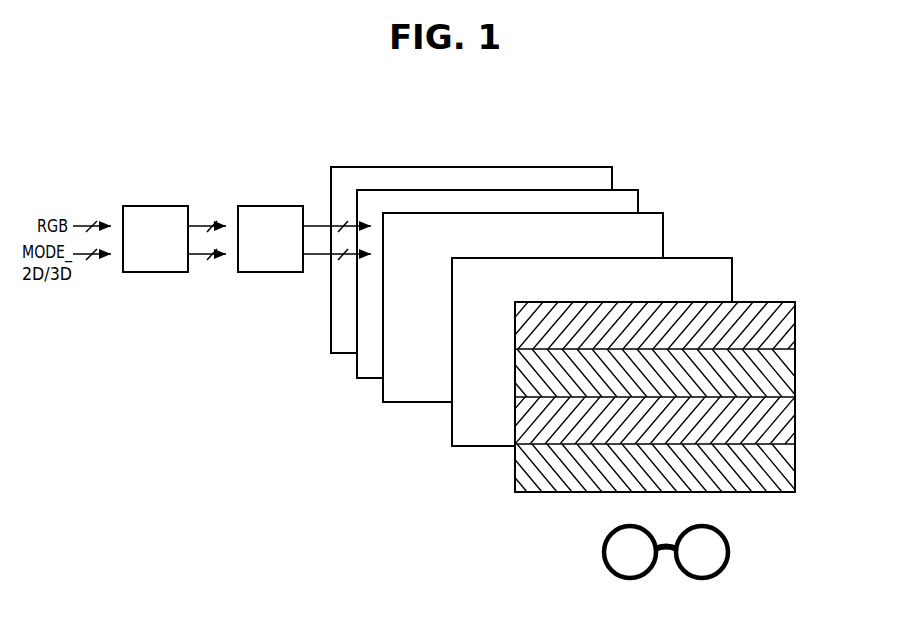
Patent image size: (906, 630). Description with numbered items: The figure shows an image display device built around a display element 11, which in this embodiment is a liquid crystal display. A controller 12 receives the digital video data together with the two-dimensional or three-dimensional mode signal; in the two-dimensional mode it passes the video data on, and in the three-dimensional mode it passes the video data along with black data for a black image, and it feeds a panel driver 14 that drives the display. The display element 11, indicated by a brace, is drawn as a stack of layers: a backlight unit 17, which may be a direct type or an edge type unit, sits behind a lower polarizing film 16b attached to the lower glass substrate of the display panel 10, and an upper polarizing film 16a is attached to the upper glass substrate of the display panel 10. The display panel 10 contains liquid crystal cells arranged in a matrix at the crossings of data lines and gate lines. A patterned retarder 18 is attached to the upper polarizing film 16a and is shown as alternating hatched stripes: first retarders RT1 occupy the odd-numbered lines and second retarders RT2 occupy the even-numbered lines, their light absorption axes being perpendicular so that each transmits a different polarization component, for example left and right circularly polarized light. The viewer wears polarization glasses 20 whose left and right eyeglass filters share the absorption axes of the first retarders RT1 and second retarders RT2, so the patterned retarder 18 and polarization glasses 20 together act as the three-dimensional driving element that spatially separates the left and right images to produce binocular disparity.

The display panel 10 is at (658, 213).
The display element 11 is at (599, 305).
The controller 12 is at (143, 249).
The panel driver 14 is at (259, 249).
The upper polarizing film 16a is at (702, 258).
The lower polarizing film 16b is at (625, 190).
The backlight unit 17 is at (603, 167).
The patterned retarder 18 is at (676, 373).
The first retarder RT1 is at (795, 322).
The second retarder RT2 is at (795, 370).
The polarization glasses 20 is at (733, 530).